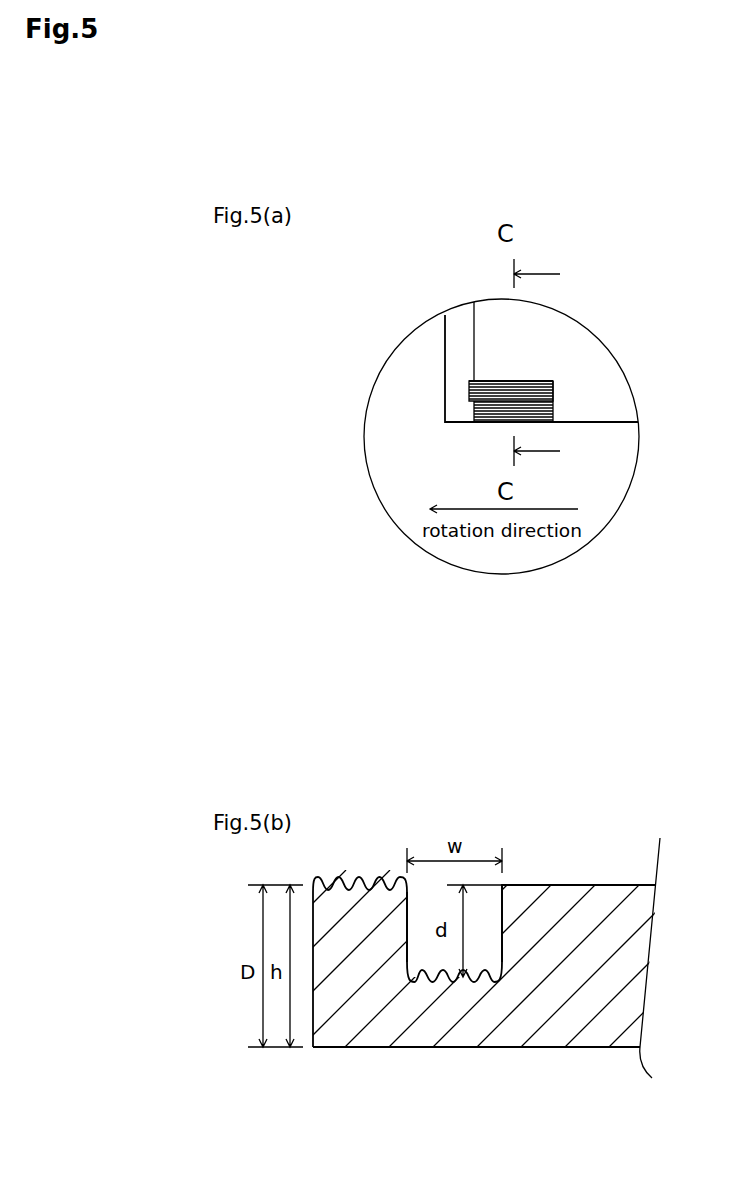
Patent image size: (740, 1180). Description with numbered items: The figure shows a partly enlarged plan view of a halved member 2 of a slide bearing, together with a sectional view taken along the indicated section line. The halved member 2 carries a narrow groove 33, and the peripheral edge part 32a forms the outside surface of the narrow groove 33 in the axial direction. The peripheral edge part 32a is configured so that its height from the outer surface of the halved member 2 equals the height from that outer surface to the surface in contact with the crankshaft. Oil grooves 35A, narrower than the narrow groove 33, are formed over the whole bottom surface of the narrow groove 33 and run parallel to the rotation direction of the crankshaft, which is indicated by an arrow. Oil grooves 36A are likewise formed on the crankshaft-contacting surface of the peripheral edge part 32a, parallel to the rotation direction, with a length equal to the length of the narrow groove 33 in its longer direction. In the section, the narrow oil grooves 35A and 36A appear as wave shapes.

In FIG. 5B, the halved member 2 is at (583, 895).
In FIG. 5A, the narrow groove 33 is at (543, 382).
In FIG. 5B, the narrow groove 33 is at (500, 953).
In FIG. 5A, the peripheral edge part 32a is at (543, 415).
In FIG. 5B, the peripheral edge part 32a is at (382, 885).
In FIG. 5A, the oil groove 35A is at (500, 382).
In FIG. 5B, the oil groove 35A is at (422, 980).
In FIG. 5A, the oil groove 36A is at (482, 418).
In FIG. 5B, the oil groove 36A is at (328, 892).